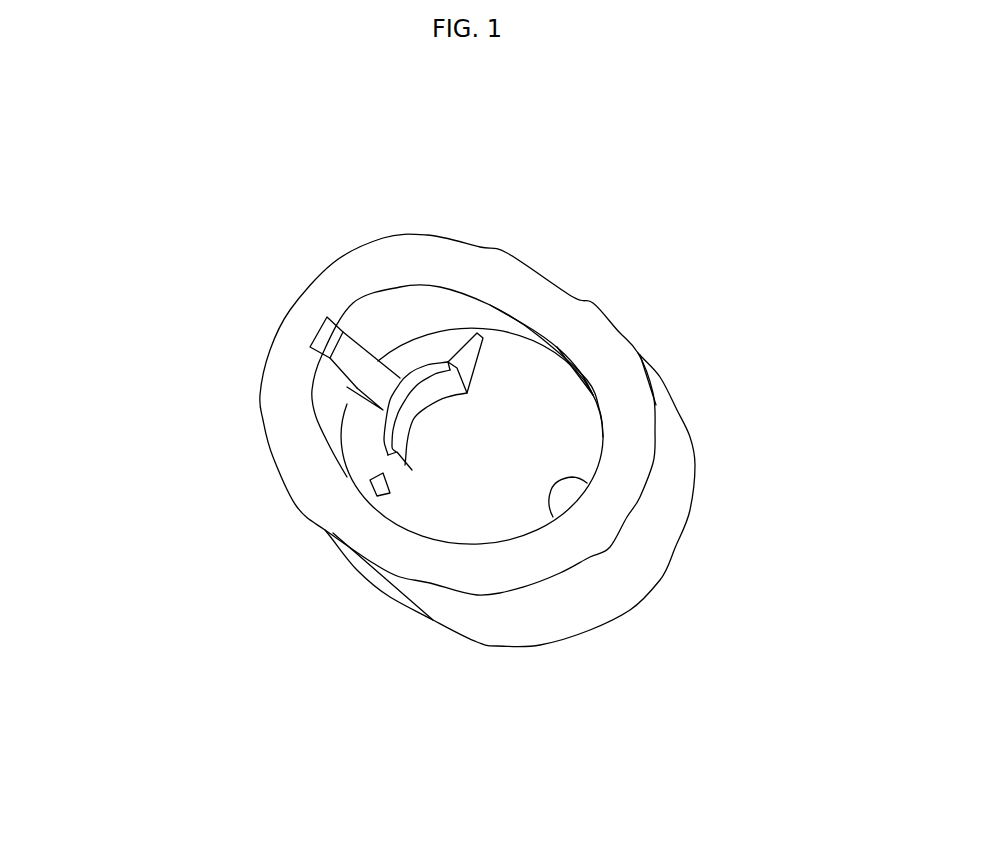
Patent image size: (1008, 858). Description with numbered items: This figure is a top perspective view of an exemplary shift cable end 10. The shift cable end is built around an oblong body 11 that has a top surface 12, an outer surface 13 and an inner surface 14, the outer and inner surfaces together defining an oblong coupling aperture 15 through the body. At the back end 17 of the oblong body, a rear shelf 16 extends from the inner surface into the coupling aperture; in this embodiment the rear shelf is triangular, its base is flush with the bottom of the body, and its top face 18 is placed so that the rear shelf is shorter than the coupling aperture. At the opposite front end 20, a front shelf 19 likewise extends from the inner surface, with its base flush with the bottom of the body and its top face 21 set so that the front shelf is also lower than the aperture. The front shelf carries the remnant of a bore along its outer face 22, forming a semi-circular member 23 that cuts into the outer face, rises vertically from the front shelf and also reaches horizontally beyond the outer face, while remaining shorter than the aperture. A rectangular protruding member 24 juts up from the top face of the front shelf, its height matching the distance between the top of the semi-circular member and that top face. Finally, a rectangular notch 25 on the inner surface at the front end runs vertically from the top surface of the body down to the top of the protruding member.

The shift cable end 10 is at (712, 337).
The oblong body 11 is at (260, 460).
The top surface 12 is at (637, 412).
The outer surface 13 is at (377, 577).
The inner surface 14 is at (533, 345).
The coupling aperture 15 is at (483, 477).
The rear shelf 16 is at (587, 483).
The back end 17 is at (630, 570).
The top face of the rear shelf 18 is at (561, 500).
The front shelf 19 is at (372, 481).
The front end 20 is at (320, 277).
The top face of the front shelf 21 is at (425, 352).
The outer face of the front shelf 22 is at (477, 333).
The semi-circular member 23 is at (415, 405).
The protruding member 24 is at (372, 377).
The notch 25 is at (323, 343).